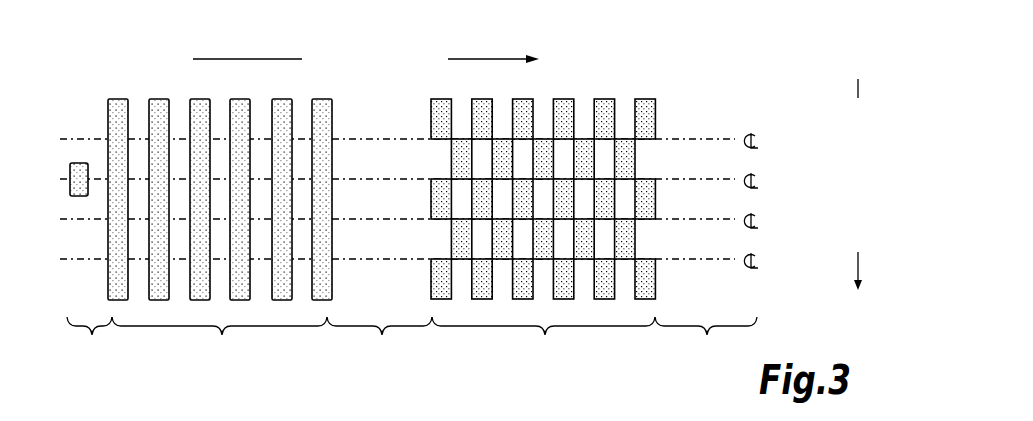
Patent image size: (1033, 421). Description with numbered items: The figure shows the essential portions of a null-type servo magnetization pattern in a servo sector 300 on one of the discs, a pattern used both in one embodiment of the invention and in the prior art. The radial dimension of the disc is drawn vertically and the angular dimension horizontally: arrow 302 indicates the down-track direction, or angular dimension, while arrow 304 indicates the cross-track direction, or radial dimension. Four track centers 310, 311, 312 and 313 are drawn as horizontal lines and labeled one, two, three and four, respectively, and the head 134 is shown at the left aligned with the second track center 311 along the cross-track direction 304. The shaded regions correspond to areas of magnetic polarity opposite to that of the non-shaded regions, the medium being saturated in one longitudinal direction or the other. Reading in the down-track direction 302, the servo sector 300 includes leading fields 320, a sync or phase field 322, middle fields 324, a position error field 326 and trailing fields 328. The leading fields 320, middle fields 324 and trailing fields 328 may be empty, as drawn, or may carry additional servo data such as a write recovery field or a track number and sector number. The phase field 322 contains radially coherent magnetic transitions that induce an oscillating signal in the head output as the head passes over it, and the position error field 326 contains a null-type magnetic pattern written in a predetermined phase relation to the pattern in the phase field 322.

The read/write head 134 is at (77, 227).
The servo sector 300 is at (644, 80).
The down-track direction arrow 302 is at (464, 58).
The cross-track direction arrow 304 is at (857, 80).
The track center 310 is at (672, 137).
The track center 311 is at (672, 177).
The track center 312 is at (672, 217).
The track center 313 is at (672, 257).
The leading fields 320 is at (89, 338).
The phase field 322 is at (220, 234).
The middle fields 324 is at (379, 343).
The position error field 326 is at (543, 343).
The trailing fields 328 is at (706, 343).